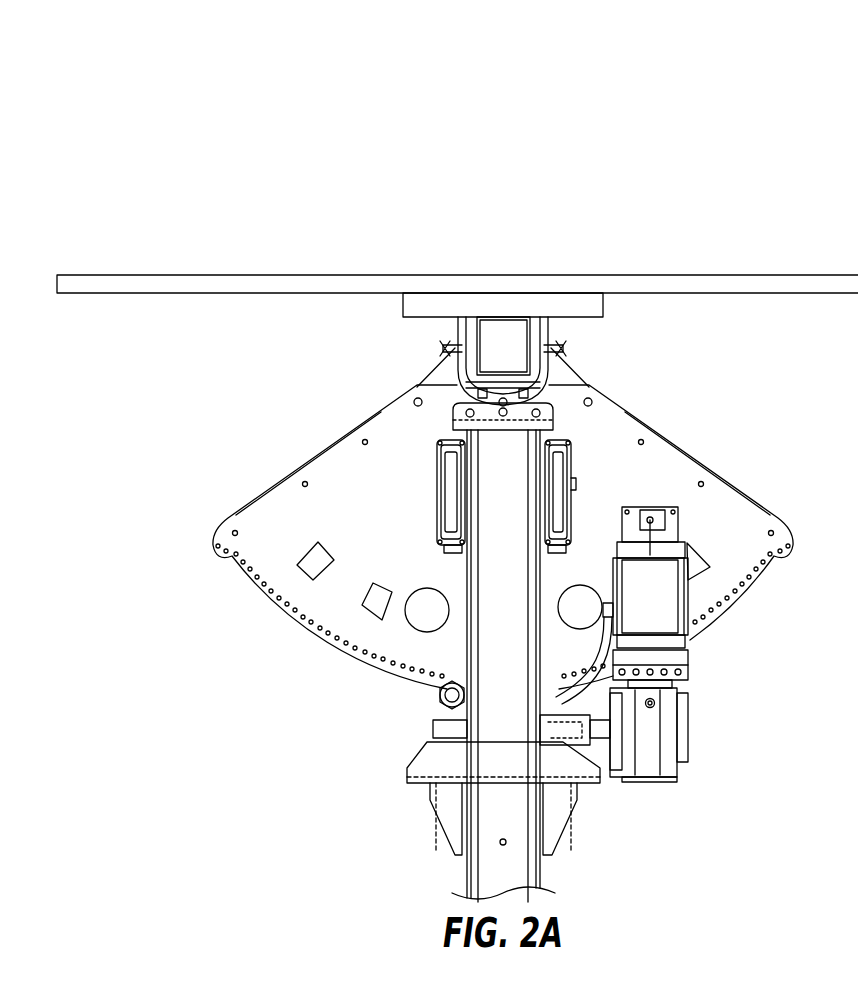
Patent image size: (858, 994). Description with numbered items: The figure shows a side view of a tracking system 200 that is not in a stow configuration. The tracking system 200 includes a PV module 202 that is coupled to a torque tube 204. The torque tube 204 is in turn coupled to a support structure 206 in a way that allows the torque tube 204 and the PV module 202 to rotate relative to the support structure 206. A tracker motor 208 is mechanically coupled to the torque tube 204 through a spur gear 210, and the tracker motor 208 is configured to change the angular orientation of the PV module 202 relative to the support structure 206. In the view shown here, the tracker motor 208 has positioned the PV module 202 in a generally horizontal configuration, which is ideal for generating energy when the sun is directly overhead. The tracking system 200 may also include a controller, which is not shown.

The tracking system 200 is at (197, 68).
The PV module 202 is at (364, 273).
The torque tube 204 is at (543, 328).
The support structure 206 is at (465, 882).
The tracker motor 208 is at (698, 704).
The spur gear 210 is at (722, 478).